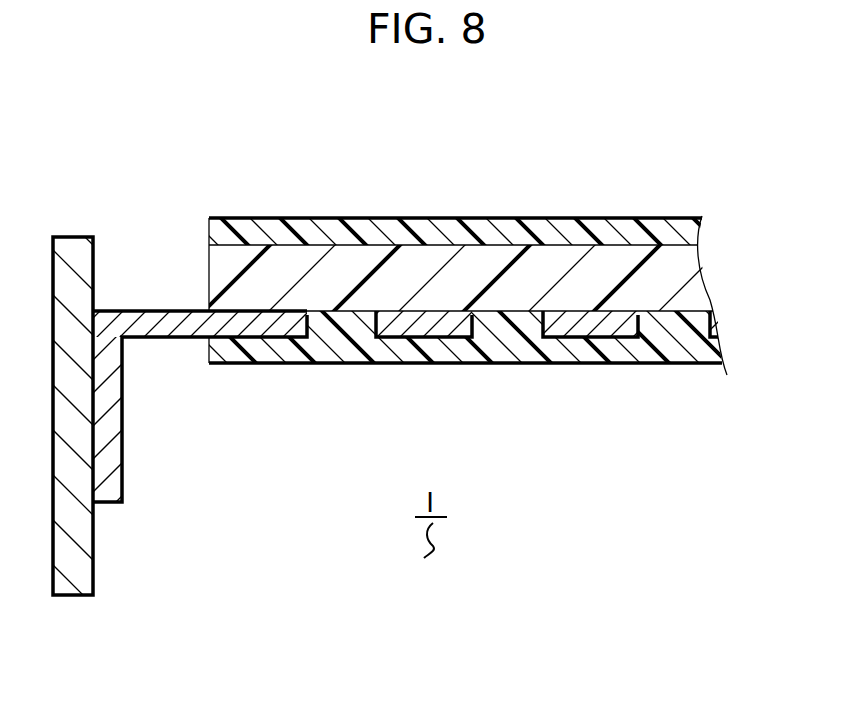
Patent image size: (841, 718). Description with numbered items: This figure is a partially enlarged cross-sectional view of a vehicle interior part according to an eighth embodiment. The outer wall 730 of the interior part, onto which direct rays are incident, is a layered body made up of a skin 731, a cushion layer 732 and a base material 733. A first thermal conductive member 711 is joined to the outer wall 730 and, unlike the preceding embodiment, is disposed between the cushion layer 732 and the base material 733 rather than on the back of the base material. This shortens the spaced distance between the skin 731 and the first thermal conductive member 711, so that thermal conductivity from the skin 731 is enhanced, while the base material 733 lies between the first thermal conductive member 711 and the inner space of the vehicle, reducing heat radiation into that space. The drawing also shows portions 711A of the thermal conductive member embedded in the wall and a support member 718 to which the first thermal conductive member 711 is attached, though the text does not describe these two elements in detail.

The first thermal conductive member 711 is at (170, 337).
The pad portions of member 711 711A is at (307, 313).
The support plate 718 is at (93, 565).
The outer wall 730 is at (455, 235).
The skin 731 is at (355, 218).
The cushion layer 732 is at (450, 248).
The base material 733 is at (313, 155).